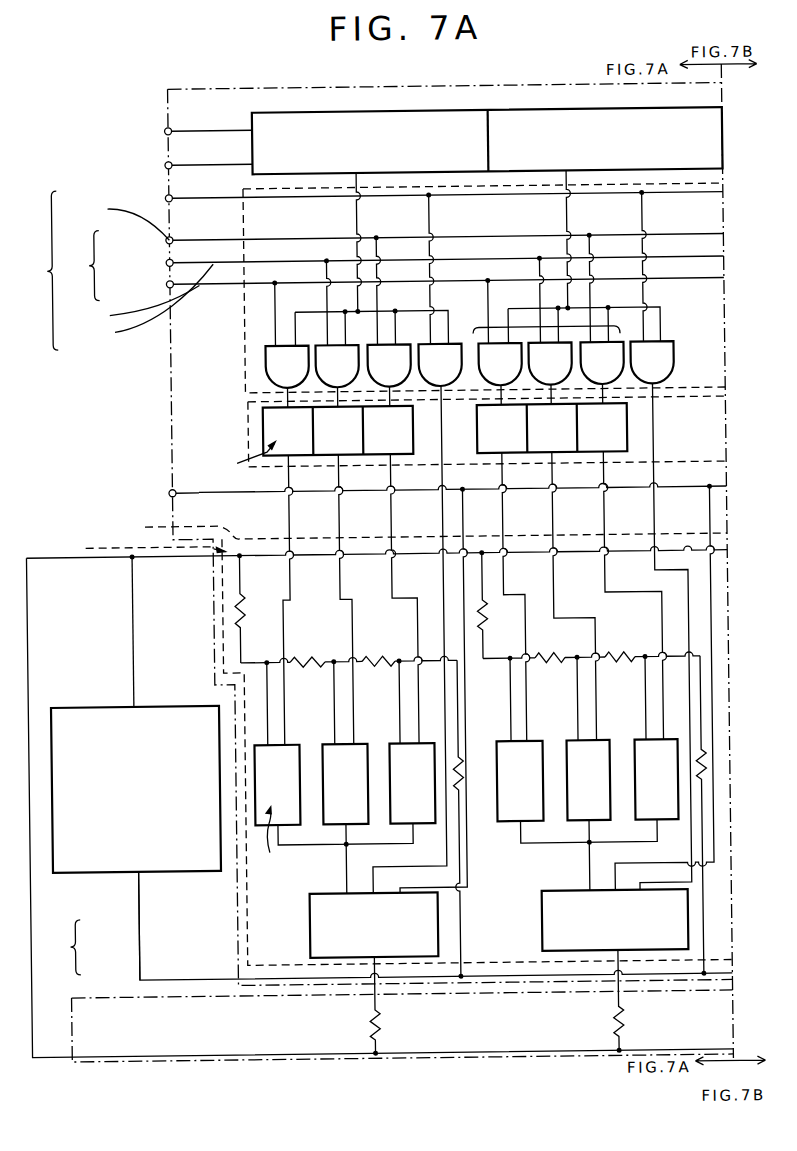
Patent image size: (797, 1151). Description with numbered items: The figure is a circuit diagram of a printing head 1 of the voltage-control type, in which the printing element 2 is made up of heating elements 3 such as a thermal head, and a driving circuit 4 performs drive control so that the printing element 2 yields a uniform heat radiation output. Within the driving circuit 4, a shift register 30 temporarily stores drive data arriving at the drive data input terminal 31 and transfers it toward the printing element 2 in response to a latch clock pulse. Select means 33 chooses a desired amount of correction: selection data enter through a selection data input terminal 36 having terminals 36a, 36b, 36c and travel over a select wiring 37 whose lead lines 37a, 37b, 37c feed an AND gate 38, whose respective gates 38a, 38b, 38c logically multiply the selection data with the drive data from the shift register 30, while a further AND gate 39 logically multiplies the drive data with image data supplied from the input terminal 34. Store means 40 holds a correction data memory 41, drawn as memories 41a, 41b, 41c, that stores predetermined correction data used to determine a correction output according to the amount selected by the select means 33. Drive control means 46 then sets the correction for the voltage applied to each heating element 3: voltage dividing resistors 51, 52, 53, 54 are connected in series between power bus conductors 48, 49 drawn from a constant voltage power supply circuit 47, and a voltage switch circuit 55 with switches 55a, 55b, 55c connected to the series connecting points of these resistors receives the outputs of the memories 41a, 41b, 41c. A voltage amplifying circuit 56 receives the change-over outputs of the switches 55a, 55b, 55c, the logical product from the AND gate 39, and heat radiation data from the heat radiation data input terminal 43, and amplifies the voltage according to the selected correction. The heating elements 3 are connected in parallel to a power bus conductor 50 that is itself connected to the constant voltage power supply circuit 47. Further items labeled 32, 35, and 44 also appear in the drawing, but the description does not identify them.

The printing head 1 is at (64, 966).
The printing element 2 is at (120, 992).
The heating elements 3 is at (385, 1019).
The driving circuit 4 is at (234, 926).
The shift register 30 is at (486, 108).
The drive data input terminal 31 is at (170, 128).
The clock input terminal 32 is at (170, 162).
The select means 33 is at (246, 293).
The input terminal 34 is at (170, 196).
The selection signal line 35 is at (216, 187).
The selection data input terminal 36 is at (100, 279).
The terminal 36a is at (170, 282).
The terminal 36b is at (170, 260).
The terminal 36c is at (170, 238).
The select wiring 37 is at (49, 279).
The lead line 37a is at (134, 308).
The lead line 37b is at (141, 310).
The lead line 37c is at (118, 221).
The AND gate 38 is at (97, 404).
The gate 38a is at (270, 355).
The gate 38b is at (332, 366).
The gate 38c is at (385, 368).
The AND gate 39 is at (458, 344).
The store means 40 is at (246, 440).
The correction data memory 41 is at (266, 424).
The memory 41a is at (394, 431).
The memory 41b is at (444, 430).
The memory 41c is at (494, 429).
The heat radiation data input terminal 43 is at (170, 490).
The control line 44 is at (201, 488).
The drive control means 46 is at (137, 540).
The constant voltage power supply circuit 47 is at (78, 703).
The power bus conductor 48 is at (171, 554).
The power bus conductor 49 is at (195, 977).
The power bus conductor 50 is at (283, 1052).
The voltage dividing resistor 51 is at (245, 608).
The voltage dividing resistor 52 is at (305, 659).
The voltage dividing resistor 53 is at (378, 659).
The voltage dividing resistor 54 is at (456, 757).
The voltage switch circuit 55 is at (392, 742).
The switch 55a is at (398, 783).
The switch 55b is at (466, 782).
The switch 55c is at (533, 781).
The voltage amplifying circuit 56 is at (306, 899).